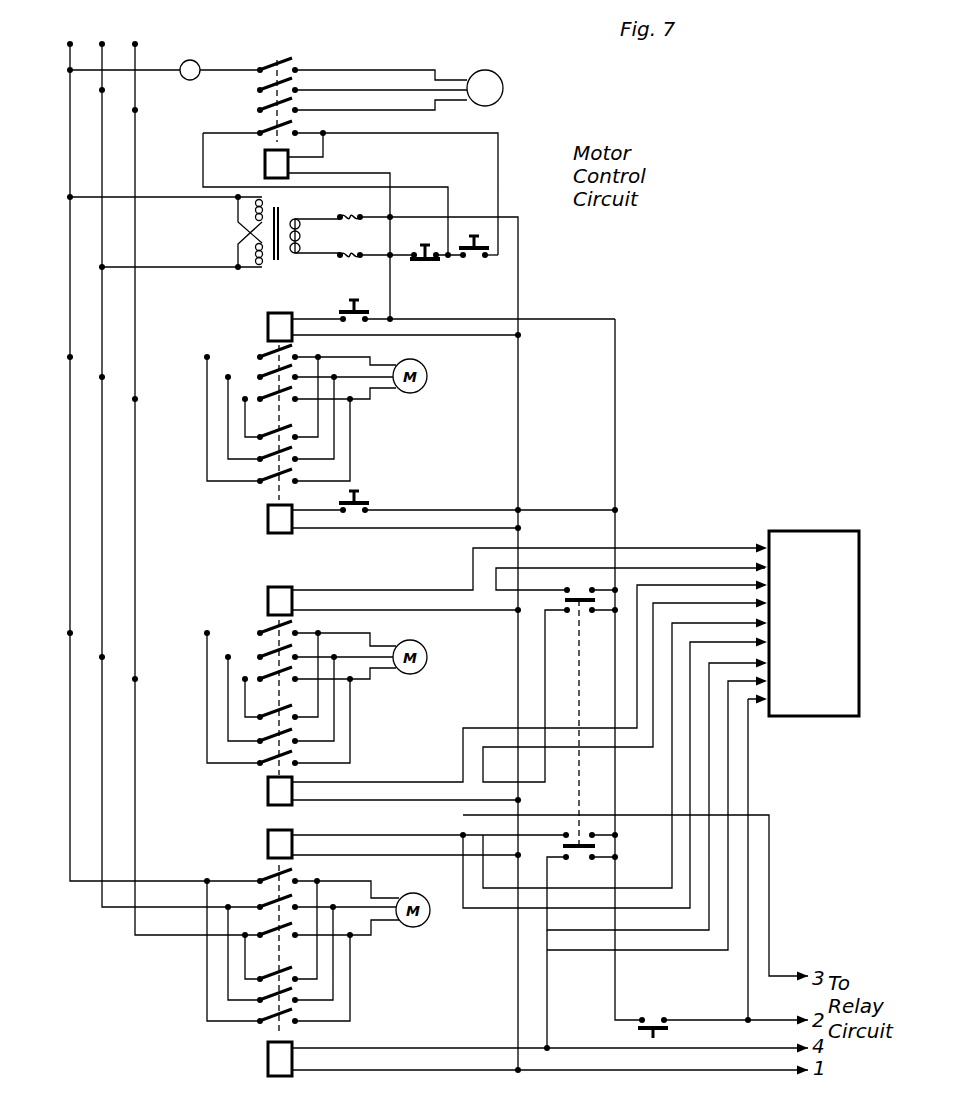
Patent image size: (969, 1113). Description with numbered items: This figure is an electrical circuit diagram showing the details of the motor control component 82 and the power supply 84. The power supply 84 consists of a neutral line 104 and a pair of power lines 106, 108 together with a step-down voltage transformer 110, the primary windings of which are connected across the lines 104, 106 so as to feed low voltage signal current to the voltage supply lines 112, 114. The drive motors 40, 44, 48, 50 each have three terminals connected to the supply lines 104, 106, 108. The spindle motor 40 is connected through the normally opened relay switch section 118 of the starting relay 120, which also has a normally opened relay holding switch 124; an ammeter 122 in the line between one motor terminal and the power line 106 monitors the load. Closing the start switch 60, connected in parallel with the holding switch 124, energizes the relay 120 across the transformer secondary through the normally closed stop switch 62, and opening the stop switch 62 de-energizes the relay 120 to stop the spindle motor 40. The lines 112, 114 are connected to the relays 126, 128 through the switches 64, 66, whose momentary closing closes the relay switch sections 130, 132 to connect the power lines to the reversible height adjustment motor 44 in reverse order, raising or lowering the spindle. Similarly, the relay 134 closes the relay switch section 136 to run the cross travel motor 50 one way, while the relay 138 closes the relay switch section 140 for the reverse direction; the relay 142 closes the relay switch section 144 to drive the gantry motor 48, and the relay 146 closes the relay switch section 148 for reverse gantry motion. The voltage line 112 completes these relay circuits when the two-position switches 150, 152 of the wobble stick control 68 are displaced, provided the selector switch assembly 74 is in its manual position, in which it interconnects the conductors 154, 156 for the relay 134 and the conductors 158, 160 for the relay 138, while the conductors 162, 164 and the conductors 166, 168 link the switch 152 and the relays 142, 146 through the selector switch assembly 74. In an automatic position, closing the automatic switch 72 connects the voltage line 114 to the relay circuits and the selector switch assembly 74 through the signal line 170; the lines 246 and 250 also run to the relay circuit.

The spindle motor 40 is at (490, 70).
The height adjustment motor 44 is at (425, 357).
The gantry motor 48 is at (420, 895).
The cross travel motor 50 is at (424, 643).
The start switch 60 is at (466, 238).
The stop switch 62 is at (438, 270).
The switch 64 is at (350, 302).
The switch 66 is at (364, 495).
The wobble stick control 68 is at (560, 673).
The automatic switch 72 is at (668, 1027).
The selector switch assembly 74 is at (833, 724).
The motor control component 82 is at (598, 309).
The power supply 84 is at (64, 180).
The neutral line 104 is at (102, 148).
The power line 106 is at (70, 115).
The power line 108 is at (133, 190).
The step-down voltage transformer 110 is at (292, 207).
The voltage supply line 112 is at (519, 447).
The voltage supply line 114 is at (616, 445).
The relay switch section 118 is at (309, 58).
The starting relay 120 is at (265, 172).
The ammeter 122 is at (200, 38).
The relay holding switch 124 is at (318, 134).
The relay 126 is at (268, 323).
The relay 128 is at (268, 526).
The relay switch section 130 is at (260, 351).
The relay switch section 132 is at (260, 435).
The relay 134 is at (268, 598).
The relay switch section 136 is at (262, 624).
The relay 138 is at (268, 792).
The relay switch section 140 is at (258, 709).
The relay 142 is at (273, 845).
The relay switch section 144 is at (288, 874).
The relay 146 is at (268, 1068).
The relay switch section 148 is at (256, 1035).
The two-position switch 150 is at (580, 592).
The two-position switch 152 is at (585, 858).
The conductor 154 is at (657, 527).
The conductor 156 is at (647, 566).
The conductor 158 is at (656, 586).
The conductor 160 is at (668, 604).
The conductor 162 is at (680, 624).
The conductor 164 is at (693, 644).
The conductor 166 is at (764, 666).
The conductor 168 is at (688, 952).
The signal line 170 is at (727, 1015).
The conductor 246 is at (434, 1046).
The conductor 250 is at (770, 908).